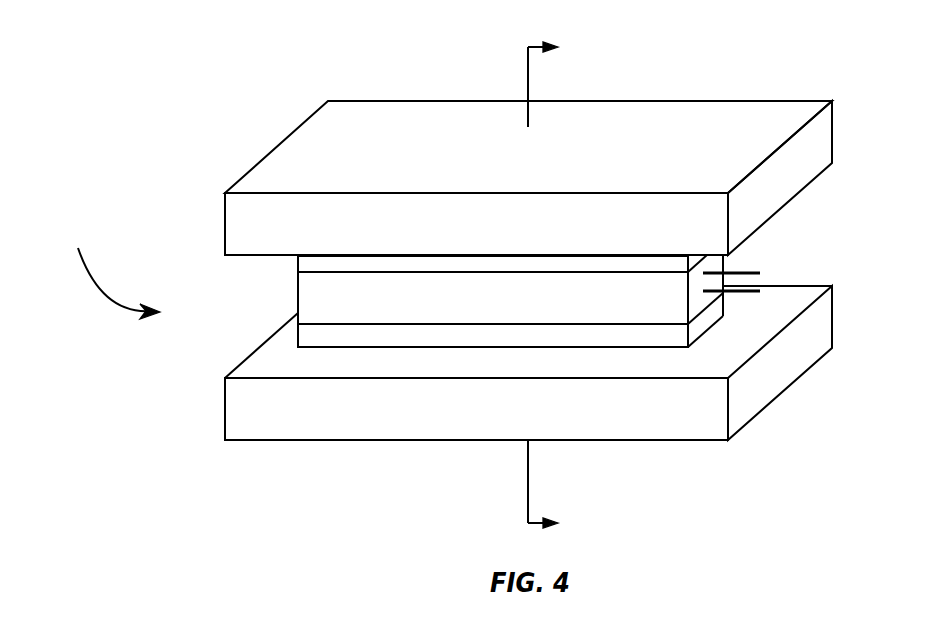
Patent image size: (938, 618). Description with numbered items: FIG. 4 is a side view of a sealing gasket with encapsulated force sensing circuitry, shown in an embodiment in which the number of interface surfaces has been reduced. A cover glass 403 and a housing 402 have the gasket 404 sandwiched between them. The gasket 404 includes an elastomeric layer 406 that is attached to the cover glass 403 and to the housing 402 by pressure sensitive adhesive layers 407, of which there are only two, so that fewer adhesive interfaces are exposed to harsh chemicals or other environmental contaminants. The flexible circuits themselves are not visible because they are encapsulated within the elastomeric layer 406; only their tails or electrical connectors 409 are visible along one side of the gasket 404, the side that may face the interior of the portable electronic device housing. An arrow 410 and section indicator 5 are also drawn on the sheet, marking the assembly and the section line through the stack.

The housing 402 is at (289, 442).
The cover glass 403 is at (832, 128).
The gasket 404 is at (443, 301).
The elastomeric layer 406 is at (298, 292).
The pressure sensitive adhesive layers 407 is at (298, 262).
The tails or electrical connectors 409 is at (745, 272).
The assembly direction arrow 410 is at (115, 297).
The section line for FIG. 5 is at (552, 285).